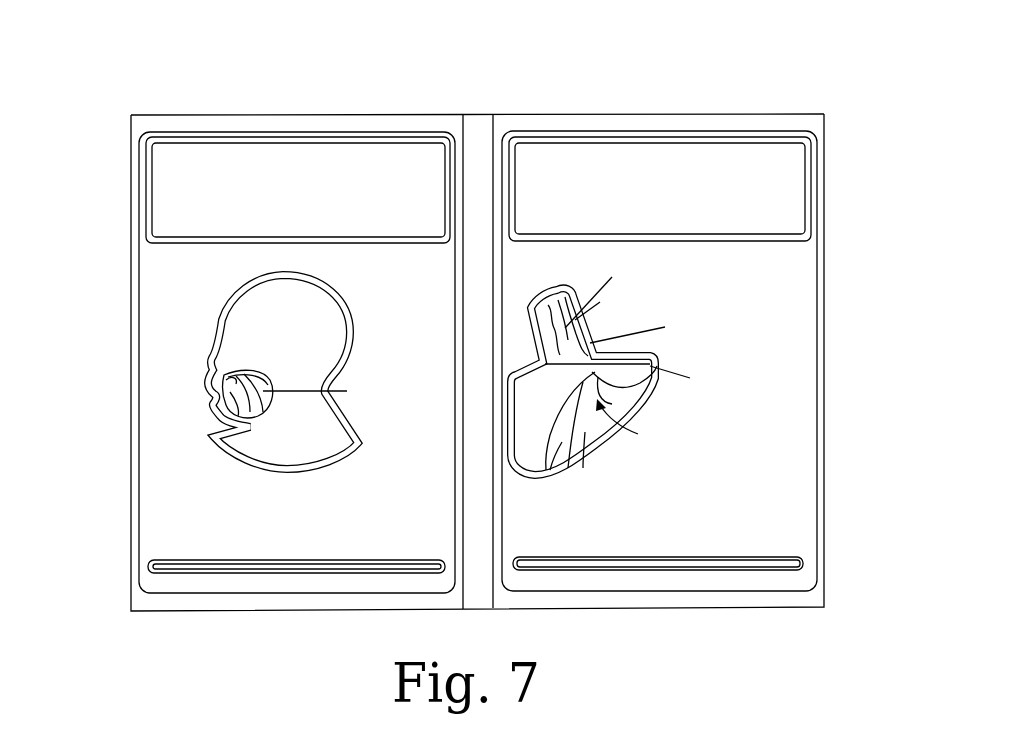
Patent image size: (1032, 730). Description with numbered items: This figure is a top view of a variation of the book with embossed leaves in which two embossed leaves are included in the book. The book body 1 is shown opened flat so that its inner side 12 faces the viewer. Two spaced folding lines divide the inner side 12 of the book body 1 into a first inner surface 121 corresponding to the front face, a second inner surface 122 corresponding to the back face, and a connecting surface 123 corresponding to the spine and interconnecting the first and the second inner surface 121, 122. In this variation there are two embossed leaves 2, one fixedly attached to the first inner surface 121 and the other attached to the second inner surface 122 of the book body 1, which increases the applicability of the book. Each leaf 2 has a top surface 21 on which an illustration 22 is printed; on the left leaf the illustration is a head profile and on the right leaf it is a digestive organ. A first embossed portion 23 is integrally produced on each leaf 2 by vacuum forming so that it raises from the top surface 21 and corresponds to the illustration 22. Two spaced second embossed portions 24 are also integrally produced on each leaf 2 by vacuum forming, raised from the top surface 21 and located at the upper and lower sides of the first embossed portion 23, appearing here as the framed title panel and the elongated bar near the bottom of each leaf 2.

The book body 1 is at (160, 624).
The leaf 2 is at (172, 462).
The inner side 12 is at (772, 409).
The top surface 21 is at (420, 273).
The illustration 22 is at (481, 379).
The first embossed portion 23 is at (226, 306).
The second embossed portions 24 is at (158, 205).
The first inner surface 121 is at (262, 122).
The second inner surface 122 is at (778, 142).
The connecting surface 123 is at (480, 577).